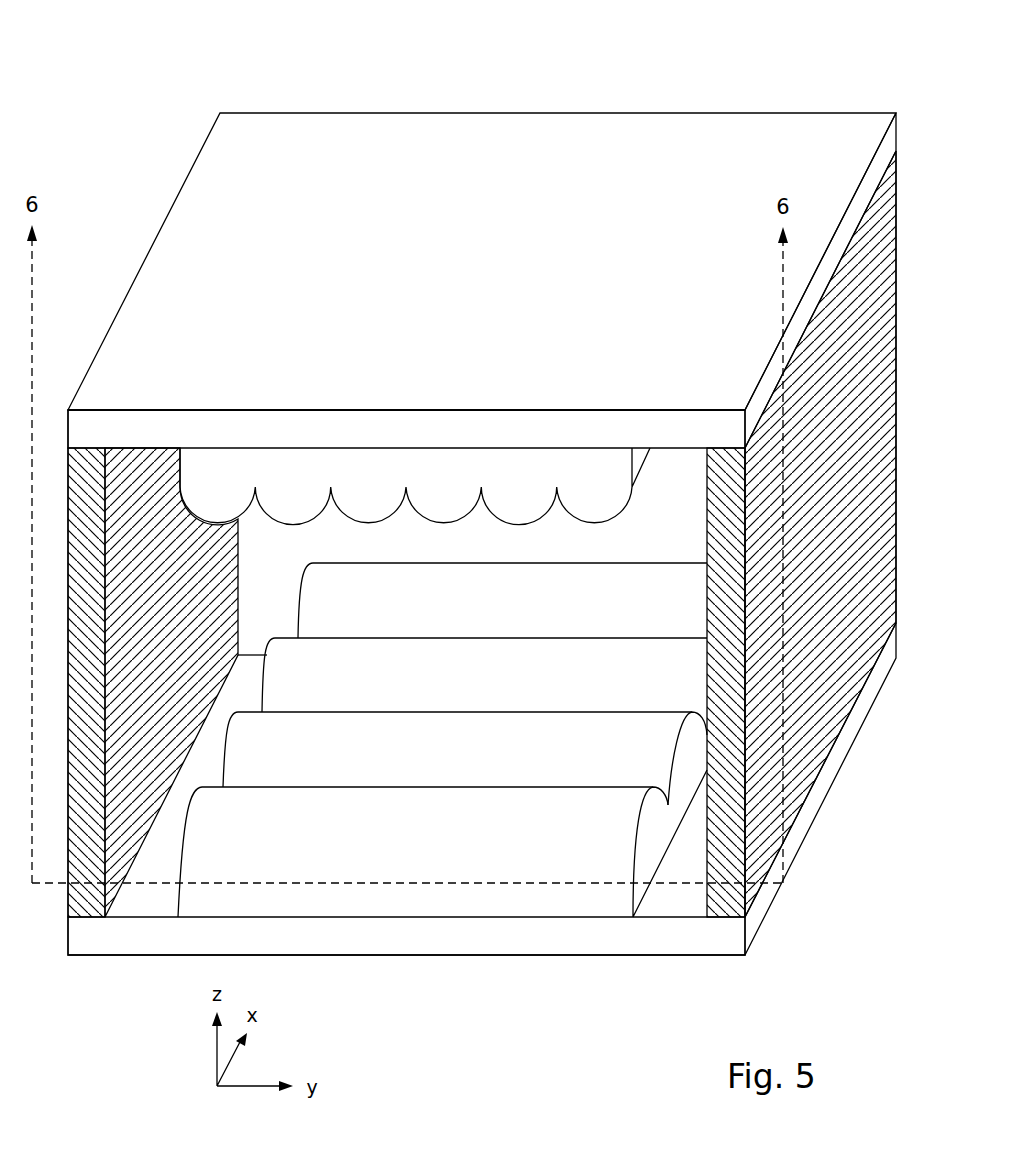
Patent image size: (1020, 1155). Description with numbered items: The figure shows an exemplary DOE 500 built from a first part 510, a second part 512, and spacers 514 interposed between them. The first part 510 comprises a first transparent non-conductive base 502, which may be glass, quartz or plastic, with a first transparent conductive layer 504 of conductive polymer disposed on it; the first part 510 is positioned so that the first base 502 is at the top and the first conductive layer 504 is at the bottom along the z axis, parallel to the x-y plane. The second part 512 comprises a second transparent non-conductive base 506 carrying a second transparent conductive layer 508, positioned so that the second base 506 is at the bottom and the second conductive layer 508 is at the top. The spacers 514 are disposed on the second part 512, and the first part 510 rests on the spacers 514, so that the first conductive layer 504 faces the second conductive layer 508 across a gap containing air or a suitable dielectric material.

The DOE 500 is at (168, 42).
The first transparent non-conductive base 502 is at (400, 410).
The first transparent conductive layer 504 is at (498, 481).
The second transparent non-conductive base 506 is at (380, 955).
The second transparent conductive layer 508 is at (475, 857).
The first part 510 is at (641, 92).
The second part 512 is at (472, 618).
The spacers 514 is at (144, 632).